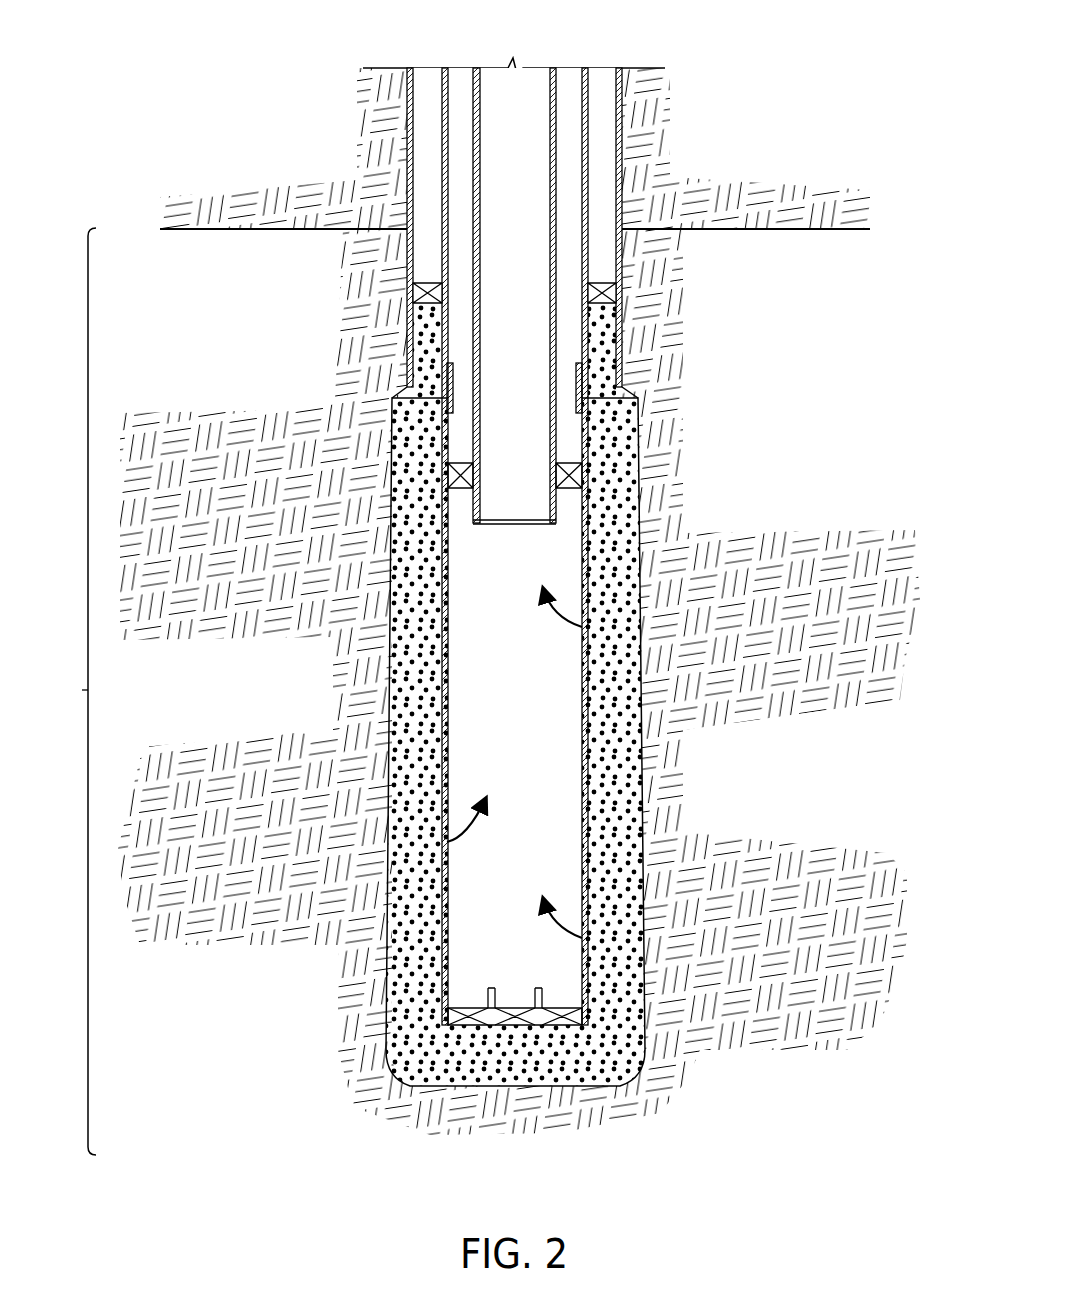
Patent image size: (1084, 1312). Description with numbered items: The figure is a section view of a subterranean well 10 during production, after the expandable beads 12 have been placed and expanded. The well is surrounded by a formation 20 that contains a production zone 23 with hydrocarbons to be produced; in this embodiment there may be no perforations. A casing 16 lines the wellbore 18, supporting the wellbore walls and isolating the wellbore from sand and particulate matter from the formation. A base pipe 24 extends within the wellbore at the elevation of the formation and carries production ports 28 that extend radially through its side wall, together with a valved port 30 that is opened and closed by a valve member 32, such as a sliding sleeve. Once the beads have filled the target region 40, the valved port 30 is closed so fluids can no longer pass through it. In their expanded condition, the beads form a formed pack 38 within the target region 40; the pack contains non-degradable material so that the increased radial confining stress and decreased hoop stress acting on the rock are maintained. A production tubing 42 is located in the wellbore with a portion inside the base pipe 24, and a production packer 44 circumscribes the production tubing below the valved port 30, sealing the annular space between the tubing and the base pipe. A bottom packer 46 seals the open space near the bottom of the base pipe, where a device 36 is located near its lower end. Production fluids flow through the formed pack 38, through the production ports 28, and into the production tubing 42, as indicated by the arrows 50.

The subterranean well 10 is at (302, 302).
The expandable beads 12 is at (623, 762).
The casing 16 is at (623, 237).
The wellbore 18 is at (424, 497).
The formation 20 is at (823, 568).
The production zone 23 is at (70, 691).
The base pipe 24 is at (588, 128).
The production ports 28 is at (447, 842).
The valved port 30 is at (413, 383).
The valve member 32 is at (618, 367).
The device 36 is at (558, 1022).
The formed pack 38 is at (617, 788).
The target region 40 is at (373, 863).
The production tubing 42 is at (553, 82).
The production packer 44 is at (458, 490).
The bottom packer 46 is at (510, 1020).
The arrows 50 is at (582, 627).